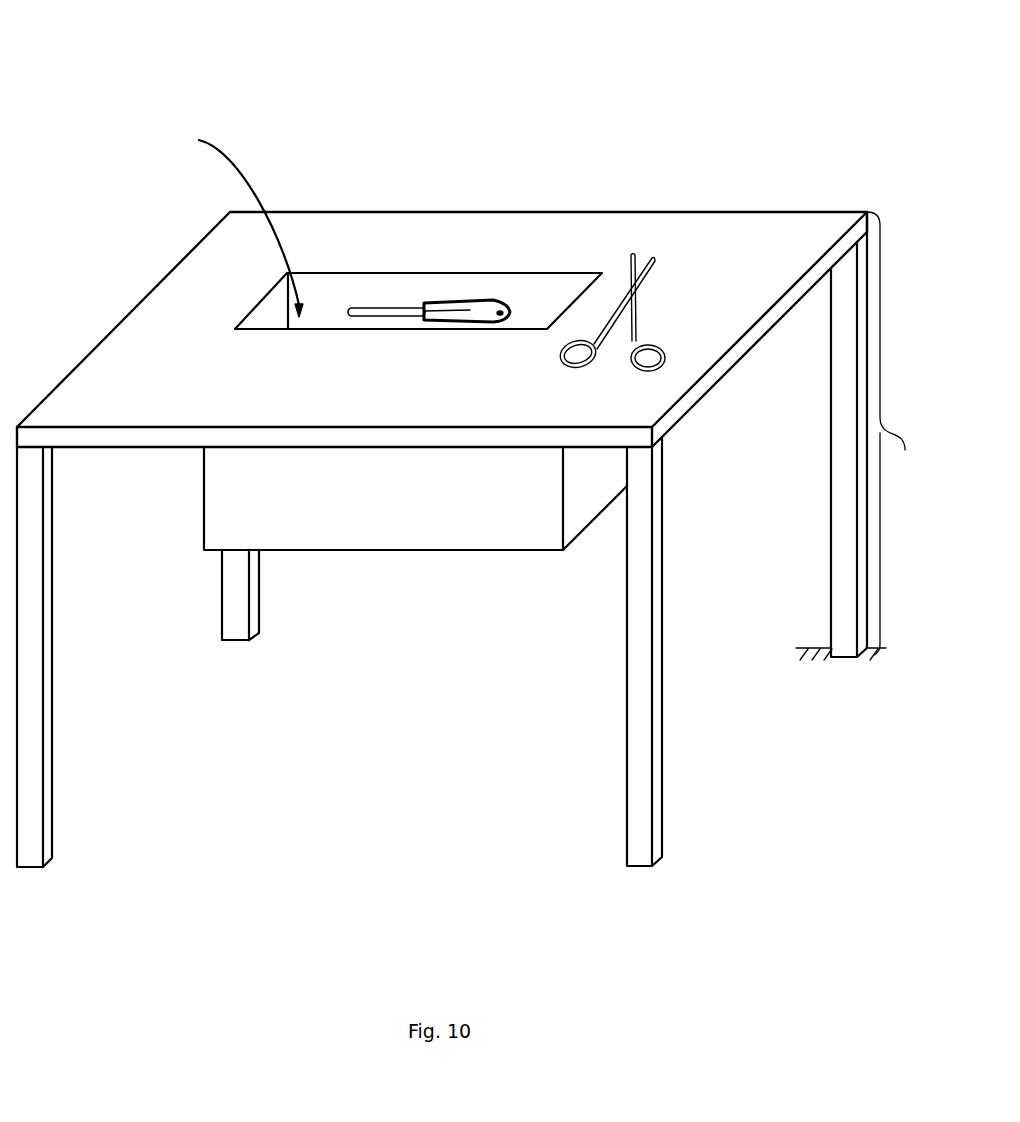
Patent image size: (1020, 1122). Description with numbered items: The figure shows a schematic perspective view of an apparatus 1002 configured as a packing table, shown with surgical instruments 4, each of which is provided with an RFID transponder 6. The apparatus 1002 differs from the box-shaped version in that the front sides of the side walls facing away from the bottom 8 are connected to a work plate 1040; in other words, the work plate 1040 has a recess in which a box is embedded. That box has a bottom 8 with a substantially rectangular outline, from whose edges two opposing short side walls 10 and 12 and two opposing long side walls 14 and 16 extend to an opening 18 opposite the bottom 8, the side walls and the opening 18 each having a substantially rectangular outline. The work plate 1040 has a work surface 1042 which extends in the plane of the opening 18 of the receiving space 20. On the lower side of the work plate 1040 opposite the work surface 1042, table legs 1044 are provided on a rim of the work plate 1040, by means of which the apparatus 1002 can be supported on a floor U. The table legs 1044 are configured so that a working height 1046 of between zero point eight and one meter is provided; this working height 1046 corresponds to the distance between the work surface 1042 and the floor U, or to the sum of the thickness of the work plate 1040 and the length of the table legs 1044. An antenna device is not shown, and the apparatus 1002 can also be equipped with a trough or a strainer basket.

The apparatus 1002 is at (200, 47).
The surgical instruments 4 is at (463, 308).
The RFID transponder 6 is at (515, 312).
The bottom 8 is at (473, 552).
The short side wall 10 is at (263, 317).
The short side wall 12 is at (593, 477).
The long side wall 14 is at (508, 290).
The long side wall 16 is at (383, 497).
The opening 18 is at (282, 297).
The receiving space 20 is at (238, 223).
The work plate 1040 is at (205, 380).
The work surface 1042 is at (326, 393).
The table legs 1044 is at (637, 779).
The working height 1046 is at (905, 450).
The floor U is at (805, 685).